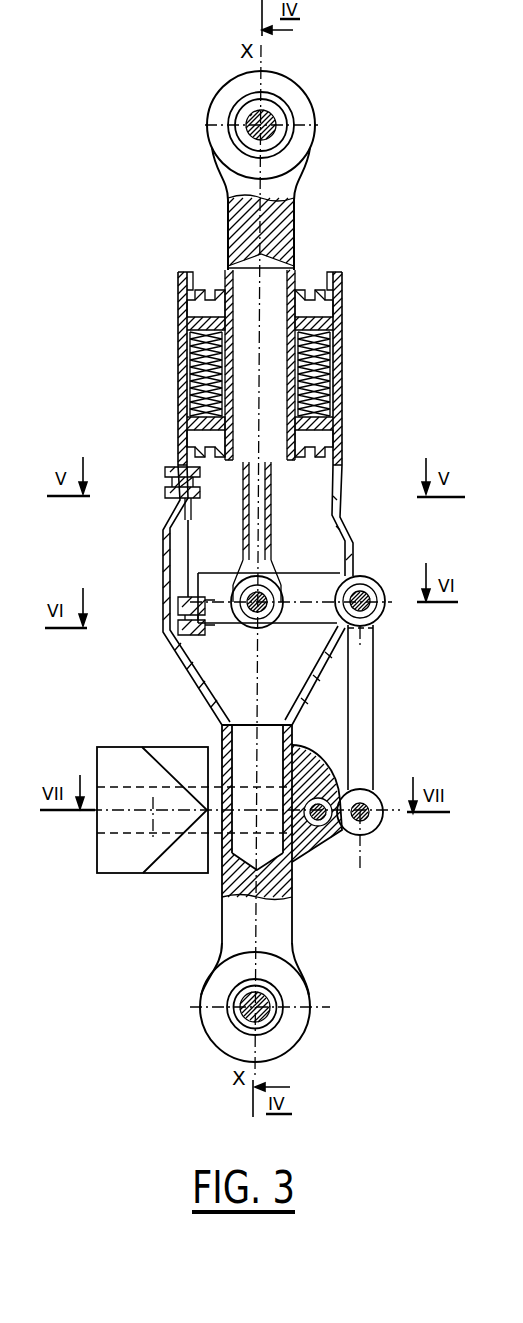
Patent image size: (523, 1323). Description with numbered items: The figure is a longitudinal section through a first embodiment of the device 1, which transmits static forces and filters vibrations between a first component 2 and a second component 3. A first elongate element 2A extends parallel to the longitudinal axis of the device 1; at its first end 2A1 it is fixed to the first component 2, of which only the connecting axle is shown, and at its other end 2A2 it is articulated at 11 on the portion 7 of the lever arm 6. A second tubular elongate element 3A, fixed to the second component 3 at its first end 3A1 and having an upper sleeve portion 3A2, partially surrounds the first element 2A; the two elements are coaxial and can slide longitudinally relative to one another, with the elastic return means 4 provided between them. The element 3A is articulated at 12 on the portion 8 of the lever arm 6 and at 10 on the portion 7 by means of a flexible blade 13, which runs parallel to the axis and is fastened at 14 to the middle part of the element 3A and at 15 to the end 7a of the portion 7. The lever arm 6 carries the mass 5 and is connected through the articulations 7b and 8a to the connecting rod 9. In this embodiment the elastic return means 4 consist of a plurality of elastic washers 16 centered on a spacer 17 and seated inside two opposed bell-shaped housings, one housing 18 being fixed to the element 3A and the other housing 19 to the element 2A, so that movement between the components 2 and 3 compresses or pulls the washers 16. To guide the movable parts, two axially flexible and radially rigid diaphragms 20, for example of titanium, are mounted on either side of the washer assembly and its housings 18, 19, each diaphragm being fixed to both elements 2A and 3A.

The device 1 is at (318, 204).
The first component 2 is at (272, 112).
The first elongate element 2A is at (228, 224).
The first end of first elongate element 2A1 is at (237, 113).
The end of first elongate element 2A2 is at (240, 580).
The second component 3 is at (245, 1013).
The second tubular elongate element 3A is at (298, 922).
The first end of second tubular element 3A1 is at (230, 998).
The upper sleeve of housing 3A2 is at (180, 320).
The elastic return means 4 is at (182, 352).
The mass 5 is at (130, 760).
The lever arm 6 is at (386, 694).
The portion of lever arm 7 is at (313, 590).
The end of portion 7 7a is at (212, 630).
The articulation 7b is at (372, 588).
The portion of lever arm 8 is at (336, 790).
The articulation 8a is at (364, 825).
The connecting rod 9 is at (375, 748).
The articulation 10 is at (182, 553).
The articulation 11 is at (268, 628).
The articulation 12 is at (314, 835).
The flexible blade 13 is at (178, 525).
The fastening 14 is at (165, 472).
The fastening 15 is at (180, 608).
The elastic washers 16 is at (333, 362).
The spacer 17 is at (185, 382).
The bell-shaped housing 18 is at (338, 318).
The bell-shaped housing 19 is at (333, 408).
The diaphragms 20 is at (207, 293).